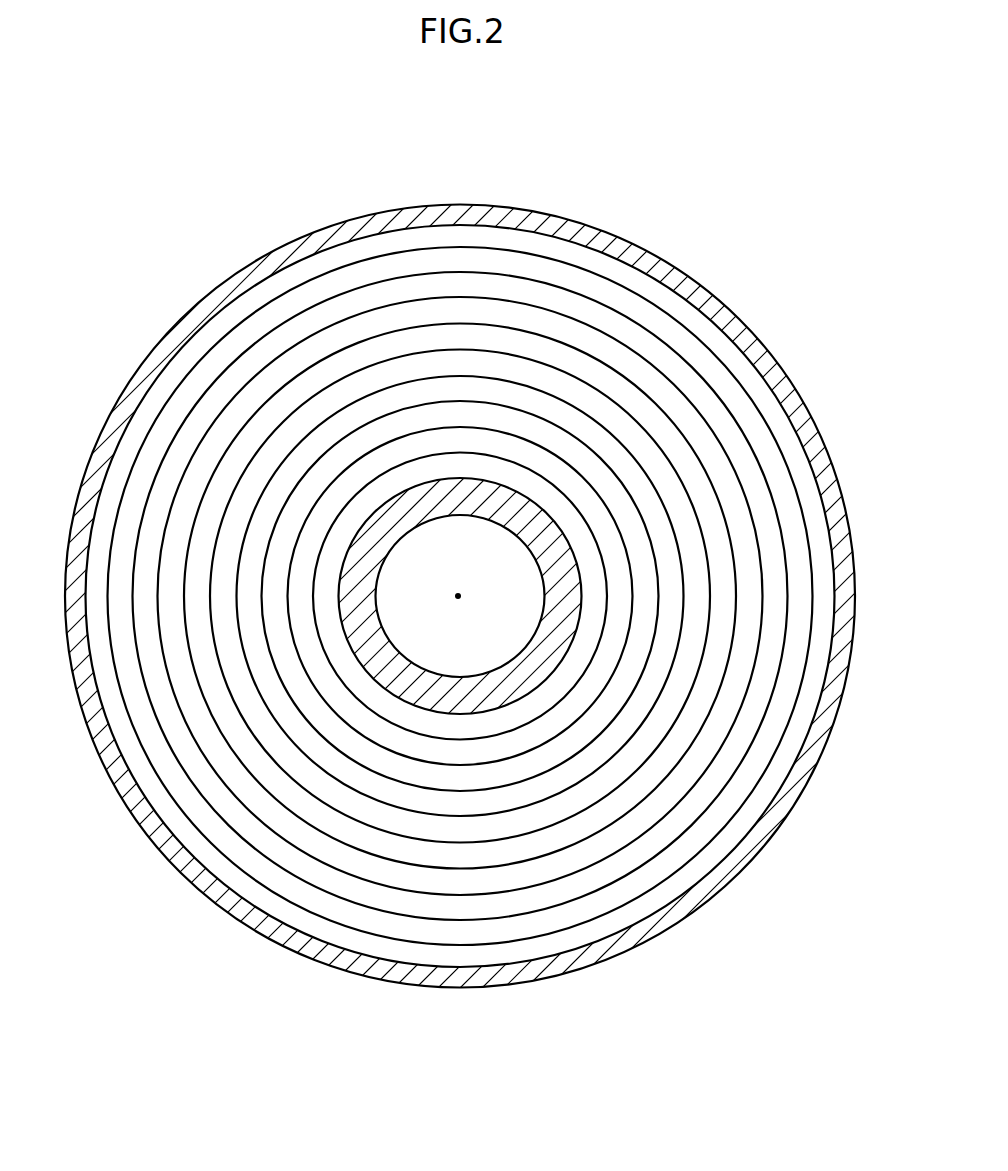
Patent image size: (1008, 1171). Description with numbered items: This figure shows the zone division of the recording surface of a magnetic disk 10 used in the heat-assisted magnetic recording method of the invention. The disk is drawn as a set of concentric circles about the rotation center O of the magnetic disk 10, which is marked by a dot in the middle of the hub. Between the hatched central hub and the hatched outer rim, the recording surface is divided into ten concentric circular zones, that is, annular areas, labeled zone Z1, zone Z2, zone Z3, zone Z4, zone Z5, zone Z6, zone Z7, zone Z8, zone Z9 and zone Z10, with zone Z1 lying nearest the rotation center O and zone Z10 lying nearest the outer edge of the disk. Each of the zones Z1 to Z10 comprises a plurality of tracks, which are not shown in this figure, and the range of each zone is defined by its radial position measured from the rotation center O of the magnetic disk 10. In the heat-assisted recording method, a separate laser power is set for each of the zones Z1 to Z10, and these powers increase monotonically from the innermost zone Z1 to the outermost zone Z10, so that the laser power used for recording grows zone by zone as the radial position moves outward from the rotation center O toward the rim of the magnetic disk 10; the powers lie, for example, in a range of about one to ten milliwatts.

The magnetic disk 10 is at (108, 199).
The rotation center O is at (466, 594).
The zone Z1 is at (448, 460).
The zone Z2 is at (298, 595).
The zone Z3 is at (463, 775).
The zone Z4 is at (630, 473).
The zone Z5 is at (608, 415).
The zone Z6 is at (577, 362).
The zone Z7 is at (500, 317).
The zone Z8 is at (428, 285).
The zone Z9 is at (342, 287).
The zone Z10 is at (265, 292).